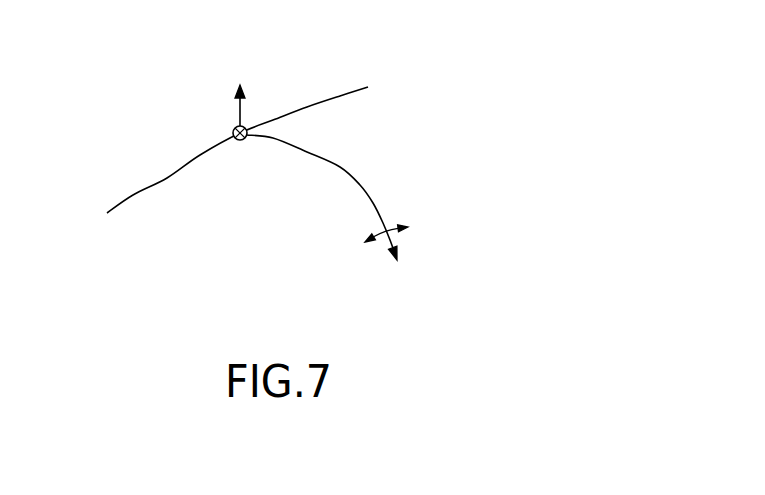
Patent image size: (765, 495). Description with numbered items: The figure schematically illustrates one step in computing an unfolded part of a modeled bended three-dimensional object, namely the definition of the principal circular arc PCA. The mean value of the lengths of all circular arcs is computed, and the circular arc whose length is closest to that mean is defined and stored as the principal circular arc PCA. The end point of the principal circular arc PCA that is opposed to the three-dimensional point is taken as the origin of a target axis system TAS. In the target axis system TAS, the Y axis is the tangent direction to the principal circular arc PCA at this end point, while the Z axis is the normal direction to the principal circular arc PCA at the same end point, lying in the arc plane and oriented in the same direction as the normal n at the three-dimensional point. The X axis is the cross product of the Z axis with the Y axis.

The principal circular arc PCA is at (345, 152).
The target axis system TAS is at (419, 259).
The normal n is at (243, 53).